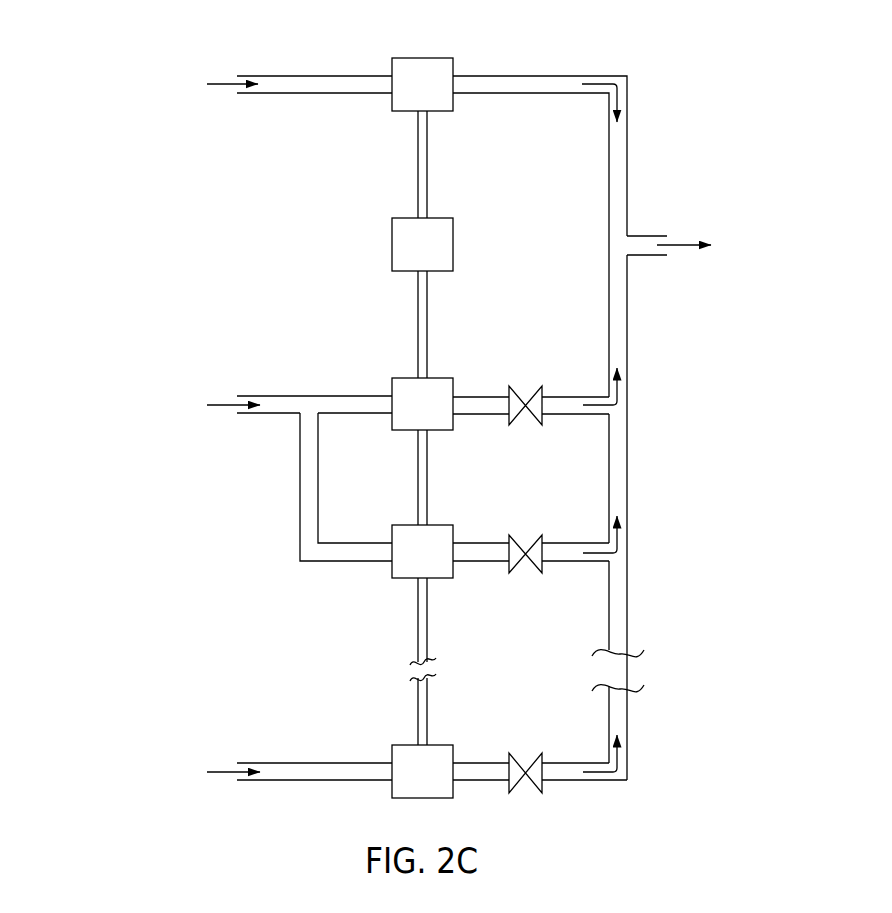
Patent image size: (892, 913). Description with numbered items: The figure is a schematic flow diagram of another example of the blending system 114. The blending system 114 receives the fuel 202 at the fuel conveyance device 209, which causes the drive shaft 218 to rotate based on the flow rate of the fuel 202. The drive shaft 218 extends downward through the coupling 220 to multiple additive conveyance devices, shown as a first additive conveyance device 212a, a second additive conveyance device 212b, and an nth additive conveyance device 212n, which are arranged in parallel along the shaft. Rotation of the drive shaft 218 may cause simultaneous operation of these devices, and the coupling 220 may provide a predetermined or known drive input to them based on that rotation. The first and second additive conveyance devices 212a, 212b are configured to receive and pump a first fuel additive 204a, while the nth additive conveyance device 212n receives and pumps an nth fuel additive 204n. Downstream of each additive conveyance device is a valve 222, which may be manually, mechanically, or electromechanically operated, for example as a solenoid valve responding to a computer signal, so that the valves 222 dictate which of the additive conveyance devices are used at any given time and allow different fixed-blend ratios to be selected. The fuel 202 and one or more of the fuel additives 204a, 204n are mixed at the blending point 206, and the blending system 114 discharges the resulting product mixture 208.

The blending system 114 is at (214, 27).
The fuel 202 is at (207, 84).
The first fuel additive 204a is at (207, 405).
The nth fuel additive 204n is at (207, 772).
The blending point 206 is at (636, 226).
The product mixture 208 is at (678, 245).
The fuel conveyance device 209 is at (442, 98).
The first additive conveyance device 212a is at (447, 418).
The second additive conveyance device 212b is at (447, 566).
The nth additive conveyance device 212n is at (447, 786).
The drive shaft 218 is at (416, 162).
The coupling 220 is at (442, 258).
The valve 222 is at (531, 391).